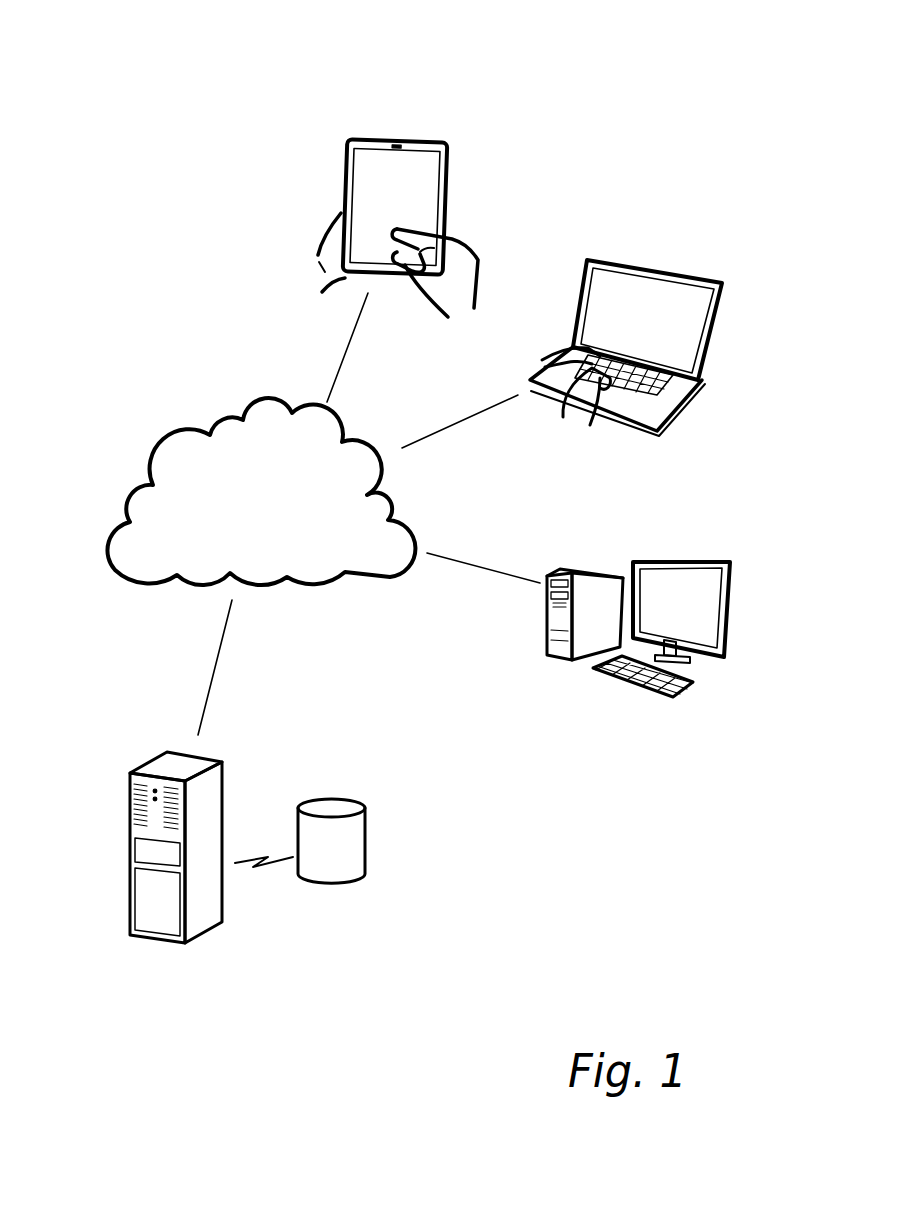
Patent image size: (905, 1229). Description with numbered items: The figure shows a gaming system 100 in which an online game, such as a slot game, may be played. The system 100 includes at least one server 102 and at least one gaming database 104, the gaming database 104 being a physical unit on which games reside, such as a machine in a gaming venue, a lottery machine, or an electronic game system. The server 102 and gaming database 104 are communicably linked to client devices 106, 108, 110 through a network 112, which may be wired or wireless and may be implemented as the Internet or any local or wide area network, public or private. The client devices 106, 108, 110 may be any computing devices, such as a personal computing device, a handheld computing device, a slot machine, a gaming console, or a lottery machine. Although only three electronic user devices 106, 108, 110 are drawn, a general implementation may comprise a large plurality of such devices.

The gaming system 100 is at (112, 118).
The server 102 is at (205, 793).
The gaming database 104 is at (340, 883).
The client device 106 is at (447, 200).
The client device 108 is at (710, 335).
The client device 110 is at (733, 612).
The network 112 is at (193, 427).